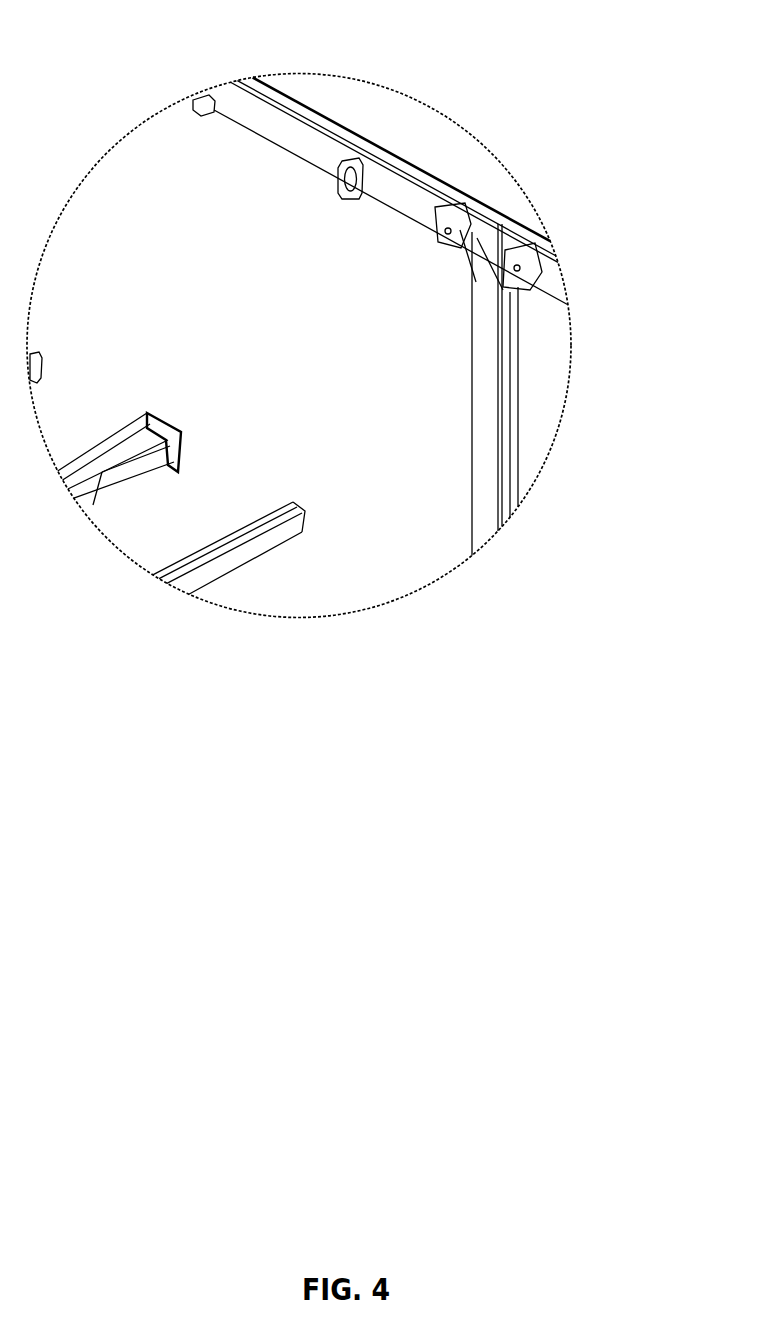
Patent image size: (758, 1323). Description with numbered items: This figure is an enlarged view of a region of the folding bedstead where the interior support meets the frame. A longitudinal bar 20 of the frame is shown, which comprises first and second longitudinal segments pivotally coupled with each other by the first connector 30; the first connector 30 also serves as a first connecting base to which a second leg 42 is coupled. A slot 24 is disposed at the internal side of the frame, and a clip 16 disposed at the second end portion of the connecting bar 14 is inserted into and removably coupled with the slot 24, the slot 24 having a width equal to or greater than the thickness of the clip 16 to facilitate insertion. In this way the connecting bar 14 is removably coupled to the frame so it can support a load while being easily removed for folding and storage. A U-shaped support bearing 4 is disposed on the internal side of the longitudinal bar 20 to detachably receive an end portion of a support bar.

The support bearing 4 is at (351, 132).
The longitudinal bar 20 is at (407, 165).
The first connector 30 is at (485, 206).
The slot 24 is at (522, 248).
The second leg 42 is at (485, 395).
The connecting bar 14 is at (102, 472).
The clip 16 is at (167, 468).